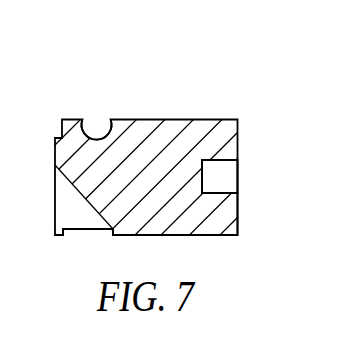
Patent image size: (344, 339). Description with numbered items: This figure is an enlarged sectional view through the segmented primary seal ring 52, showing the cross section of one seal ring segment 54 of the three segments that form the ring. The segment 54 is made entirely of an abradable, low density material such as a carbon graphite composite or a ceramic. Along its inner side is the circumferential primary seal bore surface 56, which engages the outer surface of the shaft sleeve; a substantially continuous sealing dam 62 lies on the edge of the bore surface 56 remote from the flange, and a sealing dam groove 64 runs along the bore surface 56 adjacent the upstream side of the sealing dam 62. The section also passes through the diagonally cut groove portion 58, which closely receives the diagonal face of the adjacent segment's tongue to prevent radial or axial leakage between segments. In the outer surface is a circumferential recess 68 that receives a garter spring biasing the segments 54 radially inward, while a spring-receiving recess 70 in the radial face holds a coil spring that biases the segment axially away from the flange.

The segmented primary seal ring 52 is at (152, 116).
The seal ring segment 54 is at (208, 217).
The primary seal bore surface 56 is at (150, 237).
The diagonally cut groove portion 58 is at (72, 214).
The sealing dam 62 is at (60, 238).
The sealing dam groove 64 is at (88, 236).
The circumferential recess 68 is at (94, 137).
The spring-receiving recess 70 is at (222, 177).